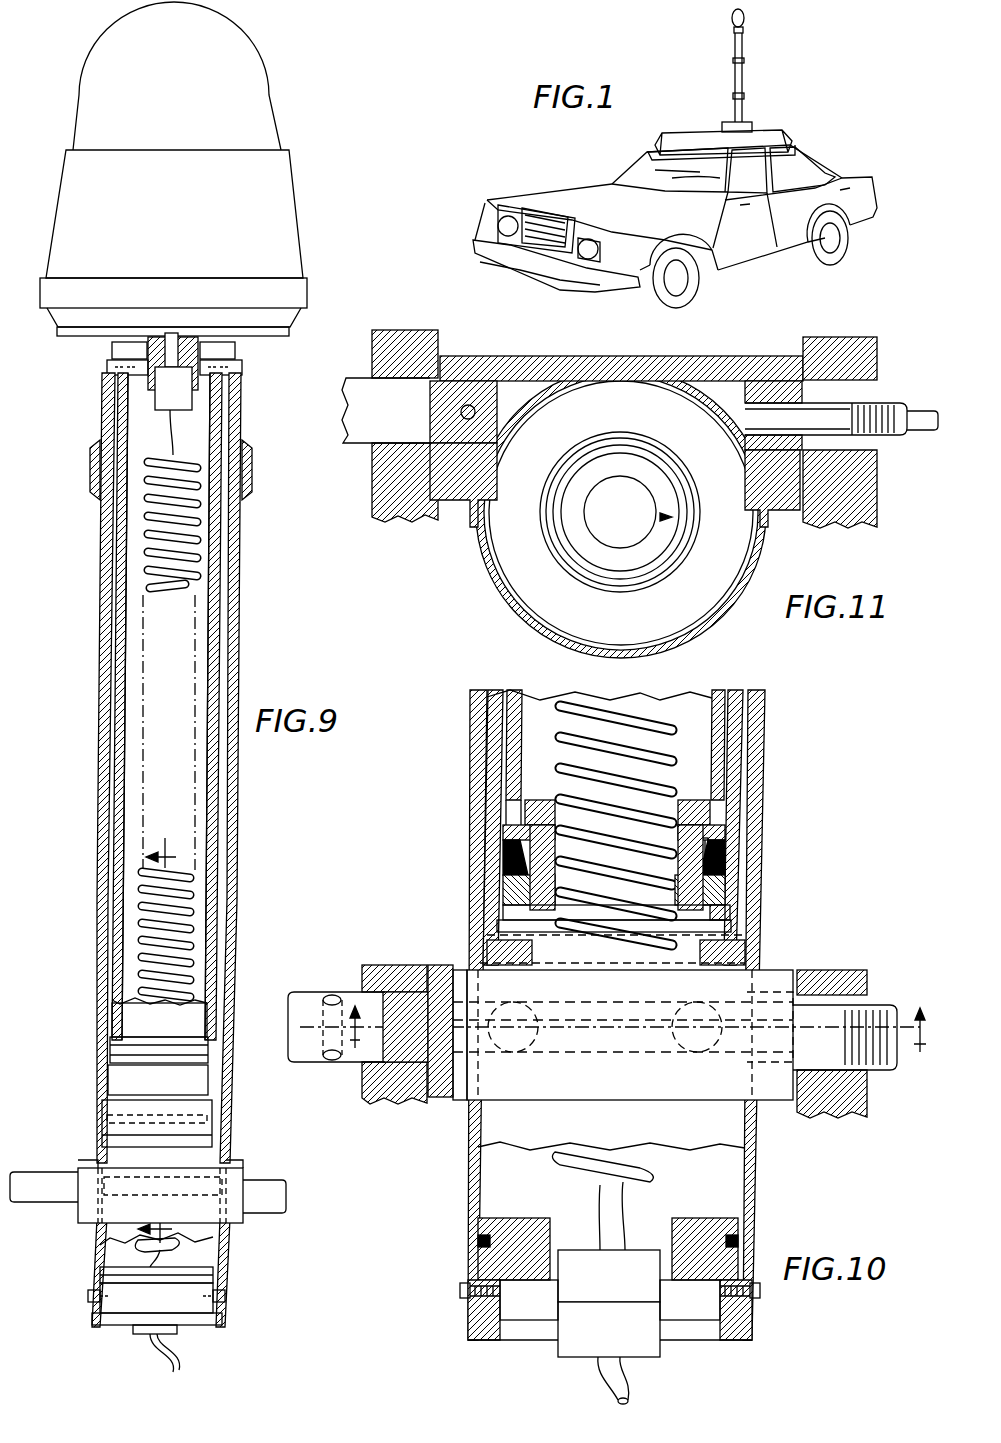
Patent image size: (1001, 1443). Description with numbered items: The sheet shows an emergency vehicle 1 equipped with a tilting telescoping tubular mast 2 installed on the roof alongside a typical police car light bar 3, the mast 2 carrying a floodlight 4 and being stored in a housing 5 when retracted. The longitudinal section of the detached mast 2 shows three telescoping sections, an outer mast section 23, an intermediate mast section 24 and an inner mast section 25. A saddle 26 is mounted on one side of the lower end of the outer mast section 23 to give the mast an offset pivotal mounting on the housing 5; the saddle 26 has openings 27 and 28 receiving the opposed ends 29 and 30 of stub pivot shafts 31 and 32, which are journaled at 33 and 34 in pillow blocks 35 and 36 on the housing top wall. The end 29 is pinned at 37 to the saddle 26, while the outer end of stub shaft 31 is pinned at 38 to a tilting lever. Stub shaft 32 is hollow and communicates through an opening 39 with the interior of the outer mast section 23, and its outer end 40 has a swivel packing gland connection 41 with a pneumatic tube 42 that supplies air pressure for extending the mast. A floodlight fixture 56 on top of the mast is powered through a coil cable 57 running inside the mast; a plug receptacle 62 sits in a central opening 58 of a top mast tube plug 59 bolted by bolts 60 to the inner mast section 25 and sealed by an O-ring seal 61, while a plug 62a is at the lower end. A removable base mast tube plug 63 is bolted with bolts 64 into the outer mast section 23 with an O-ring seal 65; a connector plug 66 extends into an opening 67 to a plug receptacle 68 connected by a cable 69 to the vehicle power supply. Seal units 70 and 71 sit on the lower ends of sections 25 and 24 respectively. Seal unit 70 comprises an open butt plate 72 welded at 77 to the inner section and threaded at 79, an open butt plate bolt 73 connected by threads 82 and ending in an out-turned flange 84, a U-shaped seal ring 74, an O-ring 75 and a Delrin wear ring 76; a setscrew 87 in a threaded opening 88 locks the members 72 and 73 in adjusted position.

In FIG. 1, the vehicle 1 is at (760, 272).
In FIG. 9, the telescoping mast 2 is at (250, 620).
In FIG. 1, the telescoping mast 2 is at (752, 112).
In FIG. 1, the light bar 3 is at (680, 128).
In FIG. 9, the floodlight 4 is at (232, 40).
In FIG. 1, the floodlight 4 is at (749, 17).
In FIG. 1, the housing 5 is at (782, 130).
In FIG. 9, the outer mast section 23 is at (237, 804).
In FIG. 11, the outer mast section 23 is at (506, 597).
In FIG. 10, the outer mast section 23 is at (762, 748).
In FIG. 9, the intermediate mast section 24 is at (226, 827).
In FIG. 10, the intermediate mast section 24 is at (740, 726).
In FIG. 9, the inner mast section 25 is at (216, 858).
In FIG. 10, the inner mast section 25 is at (724, 708).
In FIG. 9, the saddle 26 is at (74, 1212).
In FIG. 10, the saddle 26 is at (782, 968).
In FIG. 11, the opening 27 is at (460, 380).
In FIG. 10, the opening 27 is at (440, 992).
In FIG. 11, the opening 28 is at (773, 370).
In FIG. 11, the end of stub shaft 29 is at (490, 385).
In FIG. 10, the end of stub shaft 29 is at (443, 1100).
In FIG. 11, the end of stub shaft 30 is at (760, 385).
In FIG. 10, the end of stub shaft 30 is at (768, 1102).
In FIG. 9, the stub pivot shaft 31 is at (27, 1170).
In FIG. 11, the stub pivot shaft 31 is at (362, 430).
In FIG. 10, the stub pivot shaft 31 is at (313, 1066).
In FIG. 9, the stub pivot shaft 32 is at (270, 1212).
In FIG. 11, the stub pivot shaft 32 is at (893, 383).
In FIG. 10, the stub pivot shaft 32 is at (882, 1078).
In FIG. 11, the journal 33 is at (378, 495).
In FIG. 10, the journal 33 is at (388, 975).
In FIG. 11, the journal 34 is at (856, 462).
In FIG. 10, the journal 34 is at (845, 985).
In FIG. 11, the pillow block 35 is at (410, 338).
In FIG. 10, the pillow block 35 is at (382, 1104).
In FIG. 11, the pillow block 36 is at (860, 350).
In FIG. 10, the pillow block 36 is at (840, 1120).
In FIG. 11, the pin 37 is at (478, 415).
In FIG. 10, the pin 37 is at (506, 1046).
In FIG. 10, the pin 38 is at (332, 995).
In FIG. 11, the opening 39 is at (722, 426).
In FIG. 10, the opening 39 is at (690, 1052).
In FIG. 11, the outer end of tubular stub shaft 40 is at (890, 452).
In FIG. 11, the swivel packing gland connection 41 is at (884, 420).
In FIG. 11, the pneumatic tube 42 is at (916, 412).
In FIG. 9, the floodlight 56 is at (300, 160).
In FIG. 9, the coil cable 57 is at (152, 560).
In FIG. 11, the coil cable 57 is at (576, 533).
In FIG. 10, the coil cable 57 is at (588, 700).
In FIG. 9, the central opening 58 is at (193, 370).
In FIG. 9, the top mast tube plug 59 is at (236, 350).
In FIG. 9, the bolts 60 is at (243, 368).
In FIG. 9, the O-ring seal 61 is at (206, 375).
In FIG. 9, the plug receptacle 62 is at (155, 391).
In FIG. 9, the plug 62a is at (138, 1336).
In FIG. 10, the plug 62a is at (648, 1328).
In FIG. 9, the base mast tube plug 63 is at (185, 1326).
In FIG. 10, the base mast tube plug 63 is at (495, 1232).
In FIG. 9, the bolts 64 is at (90, 1296).
In FIG. 10, the bolts 64 is at (460, 1290).
In FIG. 9, the O-ring seal 65 is at (215, 1280).
In FIG. 10, the O-ring seal 65 is at (742, 1243).
In FIG. 10, the electrical connector plug 66 is at (636, 1258).
In FIG. 10, the opening 67 is at (553, 1222).
In FIG. 10, the plug receptacle 68 is at (580, 1342).
In FIG. 10, the cable 69 is at (628, 1392).
In FIG. 9, the upper seal unit 70 is at (130, 1073).
In FIG. 10, the upper seal unit 70 is at (670, 872).
In FIG. 9, the lower seal unit 71 is at (120, 1143).
In FIG. 11, the lower seal unit 71 is at (702, 596).
In FIG. 10, the lower seal unit 71 is at (672, 960).
In FIG. 10, the open butt plate 72 is at (726, 823).
In FIG. 10, the open butt plate bolt 73 is at (726, 880).
In FIG. 10, the seal ring 74 is at (503, 855).
In FIG. 10, the O-ring 75 is at (503, 882).
In FIG. 10, the Delrin wear ring 76 is at (503, 820).
In FIG. 10, the weld 77 is at (515, 792).
In FIG. 10, the internal threads 79 is at (686, 800).
In FIG. 10, the threads 82 is at (545, 800).
In FIG. 10, the out-turned flange 84 is at (730, 910).
In FIG. 10, the setscrew 87 is at (700, 850).
In FIG. 10, the threaded opening 88 is at (690, 818).